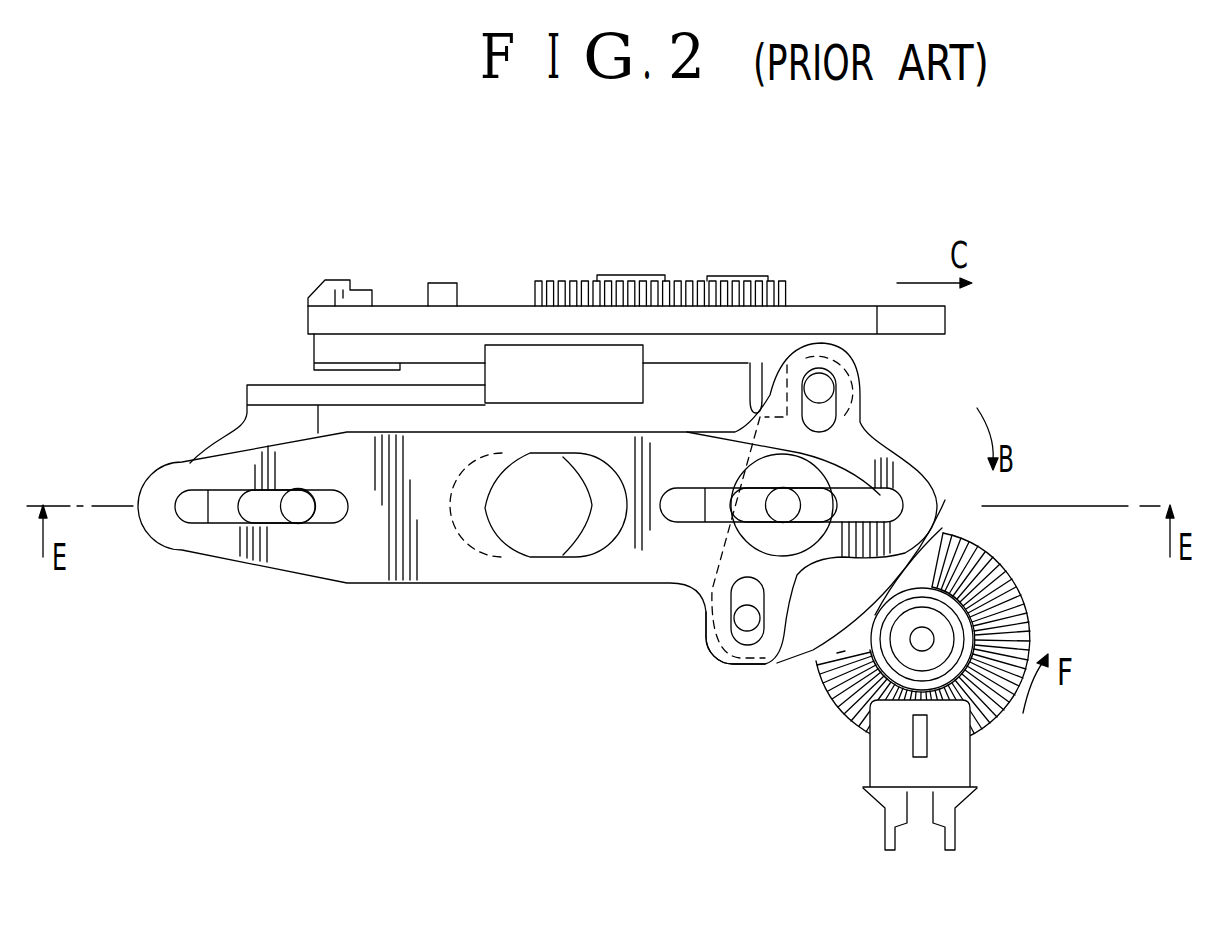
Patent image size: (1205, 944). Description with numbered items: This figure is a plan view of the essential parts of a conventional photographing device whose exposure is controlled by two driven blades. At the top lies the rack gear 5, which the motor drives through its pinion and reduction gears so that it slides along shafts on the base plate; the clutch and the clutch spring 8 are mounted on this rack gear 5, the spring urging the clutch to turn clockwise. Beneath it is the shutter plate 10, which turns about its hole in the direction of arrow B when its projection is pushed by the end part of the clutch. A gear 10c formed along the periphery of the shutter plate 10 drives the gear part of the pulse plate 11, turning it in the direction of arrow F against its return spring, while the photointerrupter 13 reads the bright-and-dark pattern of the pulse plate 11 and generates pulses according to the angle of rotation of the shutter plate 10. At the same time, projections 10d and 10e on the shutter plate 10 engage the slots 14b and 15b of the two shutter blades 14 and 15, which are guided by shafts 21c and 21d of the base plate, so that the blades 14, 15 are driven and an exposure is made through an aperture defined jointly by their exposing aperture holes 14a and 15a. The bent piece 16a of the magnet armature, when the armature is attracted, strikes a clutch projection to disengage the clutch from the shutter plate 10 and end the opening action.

The rack gear 5 is at (857, 322).
The clutch spring 8 is at (420, 350).
The shutter plate 10 is at (817, 620).
The gear 10c is at (837, 650).
The projection 10d is at (819, 388).
The projection 10e is at (747, 620).
The pulse plate 11 is at (998, 567).
The photointerrupter 13 is at (885, 745).
The shutter blade 14 is at (843, 360).
The exposing aperture hole 14a is at (537, 527).
The slot 14b is at (825, 418).
The shutter blade 15 is at (363, 557).
The exposing aperture hole 15a is at (577, 506).
The slot 15b is at (750, 587).
The bent piece 16a is at (515, 378).
The shaft 21c is at (303, 500).
The shaft 21d is at (783, 507).